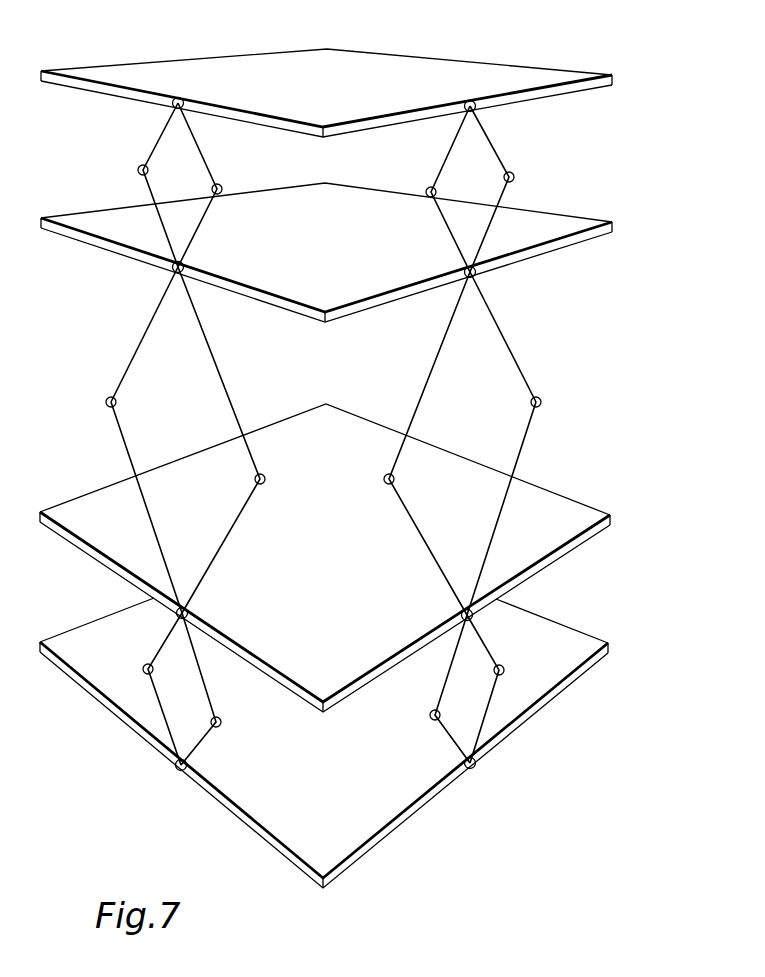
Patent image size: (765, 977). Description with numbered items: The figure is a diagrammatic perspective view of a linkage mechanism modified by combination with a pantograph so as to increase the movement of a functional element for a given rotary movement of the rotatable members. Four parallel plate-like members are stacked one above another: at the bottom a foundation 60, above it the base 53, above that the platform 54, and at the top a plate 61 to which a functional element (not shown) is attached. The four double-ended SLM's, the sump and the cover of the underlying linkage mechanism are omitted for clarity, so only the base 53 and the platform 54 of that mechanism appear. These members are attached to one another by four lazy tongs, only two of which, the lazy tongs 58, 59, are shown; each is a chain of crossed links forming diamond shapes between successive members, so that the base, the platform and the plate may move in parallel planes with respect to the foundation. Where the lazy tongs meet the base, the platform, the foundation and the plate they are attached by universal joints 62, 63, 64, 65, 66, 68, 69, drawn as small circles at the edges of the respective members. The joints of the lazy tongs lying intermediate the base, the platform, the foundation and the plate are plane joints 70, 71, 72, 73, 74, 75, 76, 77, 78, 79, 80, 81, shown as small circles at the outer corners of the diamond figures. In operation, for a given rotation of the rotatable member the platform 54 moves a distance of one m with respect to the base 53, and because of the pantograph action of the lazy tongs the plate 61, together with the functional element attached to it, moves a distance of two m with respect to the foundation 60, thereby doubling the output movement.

The base 53 is at (337, 559).
The platform 54 is at (331, 247).
The lazy tongs 58 is at (143, 337).
The lazy tongs 59 is at (513, 350).
The foundation 60 is at (372, 815).
The plate 61 is at (294, 62).
The universal joint 62 is at (181, 771).
The universal joint 63 is at (188, 612).
The universal joint 64 is at (170, 268).
The universal joint 65 is at (171, 104).
The universal joint 66 is at (478, 107).
The universal joint 68 is at (460, 614).
The universal joint 69 is at (468, 771).
The plane joint 70 is at (146, 664).
The plane joint 71 is at (220, 727).
The plane joint 72 is at (107, 398).
The plane joint 73 is at (265, 476).
The plane joint 74 is at (137, 169).
The plane joint 75 is at (223, 188).
The plane joint 76 is at (515, 177).
The plane joint 77 is at (426, 190).
The plane joint 78 is at (539, 397).
The plane joint 79 is at (385, 478).
The plane joint 80 is at (502, 665).
The plane joint 81 is at (431, 720).